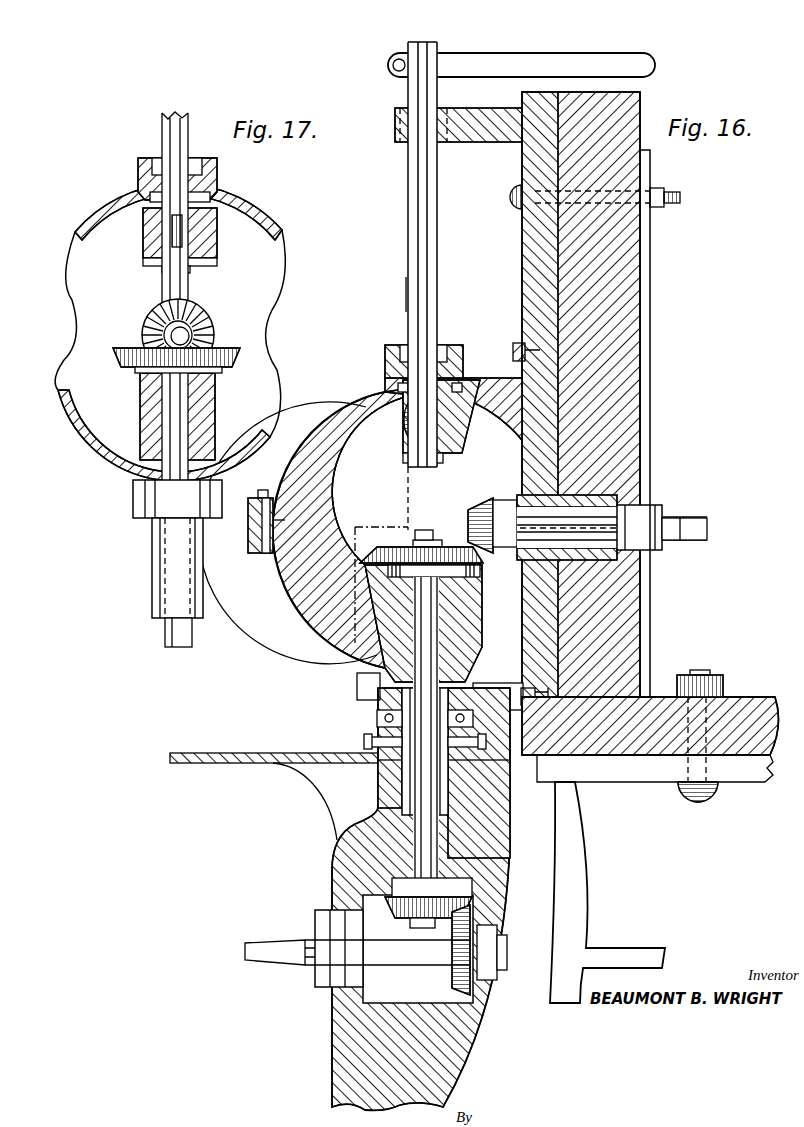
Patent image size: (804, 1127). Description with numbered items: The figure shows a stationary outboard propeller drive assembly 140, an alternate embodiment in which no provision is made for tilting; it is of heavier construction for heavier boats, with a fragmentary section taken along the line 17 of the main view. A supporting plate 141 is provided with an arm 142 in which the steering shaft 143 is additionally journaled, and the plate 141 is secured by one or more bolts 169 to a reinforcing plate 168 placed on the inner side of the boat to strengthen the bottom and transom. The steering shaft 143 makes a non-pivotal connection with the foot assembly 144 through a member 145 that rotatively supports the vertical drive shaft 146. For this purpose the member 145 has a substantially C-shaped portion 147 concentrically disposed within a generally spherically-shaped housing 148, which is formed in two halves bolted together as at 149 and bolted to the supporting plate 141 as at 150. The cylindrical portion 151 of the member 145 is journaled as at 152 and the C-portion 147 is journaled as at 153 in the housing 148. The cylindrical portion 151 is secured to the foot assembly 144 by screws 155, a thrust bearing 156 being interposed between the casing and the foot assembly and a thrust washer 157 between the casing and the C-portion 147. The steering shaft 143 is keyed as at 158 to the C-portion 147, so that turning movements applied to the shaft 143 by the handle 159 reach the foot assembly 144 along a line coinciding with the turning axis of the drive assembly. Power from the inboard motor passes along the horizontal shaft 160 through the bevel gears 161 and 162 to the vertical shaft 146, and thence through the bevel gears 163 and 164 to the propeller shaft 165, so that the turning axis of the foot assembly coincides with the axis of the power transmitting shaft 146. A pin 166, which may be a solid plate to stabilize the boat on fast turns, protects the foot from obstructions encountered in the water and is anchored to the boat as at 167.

In FIG. 16, the section line 17— 17 is at (398, 306).
In FIG. 16, the stationary outboard propeller drive assembly 140 is at (359, 370).
In FIG. 16, the supporting plate 141 is at (521, 266).
In FIG. 16, the arm 142 is at (489, 134).
In FIG. 16, the steering shaft 143 is at (407, 214).
In FIG. 17, the steering shaft 143 is at (163, 131).
In FIG. 16, the foot assembly 144 is at (332, 1037).
In FIG. 16, the member 145 is at (357, 496).
In FIG. 16, the vertical drive shaft 146 is at (440, 622).
In FIG. 17, the vertical drive shaft 146 is at (166, 637).
In FIG. 16, the C-shaped portion 147 is at (458, 434).
In FIG. 17, the C-shaped portion 147 is at (218, 249).
In FIG. 16, the spherically-shaped housing 148 is at (336, 424).
In FIG. 17, the spherically-shaped housing 148 is at (98, 219).
In FIG. 16, the bolted connection of housing halves 149 is at (263, 497).
In FIG. 16, the bolted connection to supporting plate 150 is at (513, 345).
In FIG. 16, the cylindrical portion 151 is at (418, 766).
In FIG. 17, the cylindrical portion 151 is at (153, 569).
In FIG. 16, the journal of cylindrical portion 152 is at (378, 678).
In FIG. 16, the journal of C-portion 153 is at (463, 362).
In FIG. 17, the journal of C-portion 153 is at (140, 182).
In FIG. 16, the screws 155 is at (368, 740).
In FIG. 16, the thrust bearing 156 is at (474, 718).
In FIG. 16, the thrust washer 157 is at (372, 395).
In FIG. 17, the thrust washer 157 is at (142, 198).
In FIG. 16, the key 158 is at (405, 446).
In FIG. 17, the key 158 is at (172, 238).
In FIG. 16, the handle 159 is at (567, 62).
In FIG. 16, the horizontal shaft 160 is at (678, 518).
In FIG. 17, the horizontal shaft 160 is at (164, 332).
In FIG. 16, the bevel gear 161 is at (483, 494).
In FIG. 17, the bevel gear 161 is at (206, 327).
In FIG. 16, the bevel gear 162 is at (448, 540).
In FIG. 17, the bevel gear 162 is at (232, 364).
In FIG. 16, the bevel gear 163 is at (400, 906).
In FIG. 16, the bevel gear 164 is at (455, 966).
In FIG. 16, the propeller shaft 165 is at (393, 957).
In FIG. 16, the pin 166 is at (570, 831).
In FIG. 16, the pin anchorage 167 is at (693, 805).
In FIG. 16, the reinforcing plate 168 is at (650, 650).
In FIG. 16, the bolts 169 is at (626, 204).